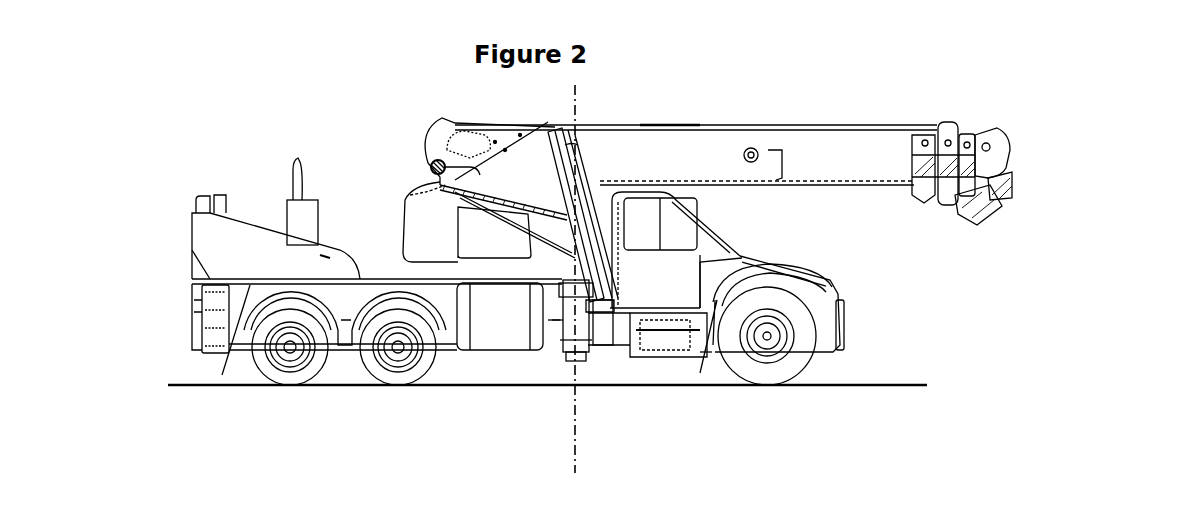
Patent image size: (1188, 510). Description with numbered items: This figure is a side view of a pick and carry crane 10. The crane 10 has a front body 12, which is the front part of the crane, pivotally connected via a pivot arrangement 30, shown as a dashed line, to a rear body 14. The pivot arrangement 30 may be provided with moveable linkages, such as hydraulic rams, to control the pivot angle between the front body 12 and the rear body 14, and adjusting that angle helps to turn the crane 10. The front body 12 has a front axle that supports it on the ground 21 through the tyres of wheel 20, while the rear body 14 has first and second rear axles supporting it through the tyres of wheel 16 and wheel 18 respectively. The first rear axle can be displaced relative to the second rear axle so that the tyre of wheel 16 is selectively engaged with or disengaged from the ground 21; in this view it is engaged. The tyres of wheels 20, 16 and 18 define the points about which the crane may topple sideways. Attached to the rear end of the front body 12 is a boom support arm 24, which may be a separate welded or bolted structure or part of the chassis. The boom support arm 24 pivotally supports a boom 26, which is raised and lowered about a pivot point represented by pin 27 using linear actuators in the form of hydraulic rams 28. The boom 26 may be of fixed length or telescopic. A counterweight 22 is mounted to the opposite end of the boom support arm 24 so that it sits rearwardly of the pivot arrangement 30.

The pick and carry crane 10 is at (1050, 263).
The front body 12 is at (518, 283).
The rear body 14 is at (243, 168).
The wheel 16 is at (290, 392).
The wheel 18 is at (398, 392).
The wheel 20 is at (772, 396).
The ground 21 is at (890, 388).
The counterweight 22 is at (390, 206).
The boom support arm 24 is at (537, 205).
The boom 26 is at (787, 115).
The pin 27 is at (428, 157).
The hydraulic rams 28 is at (592, 210).
The pivot arrangement 30 is at (568, 376).